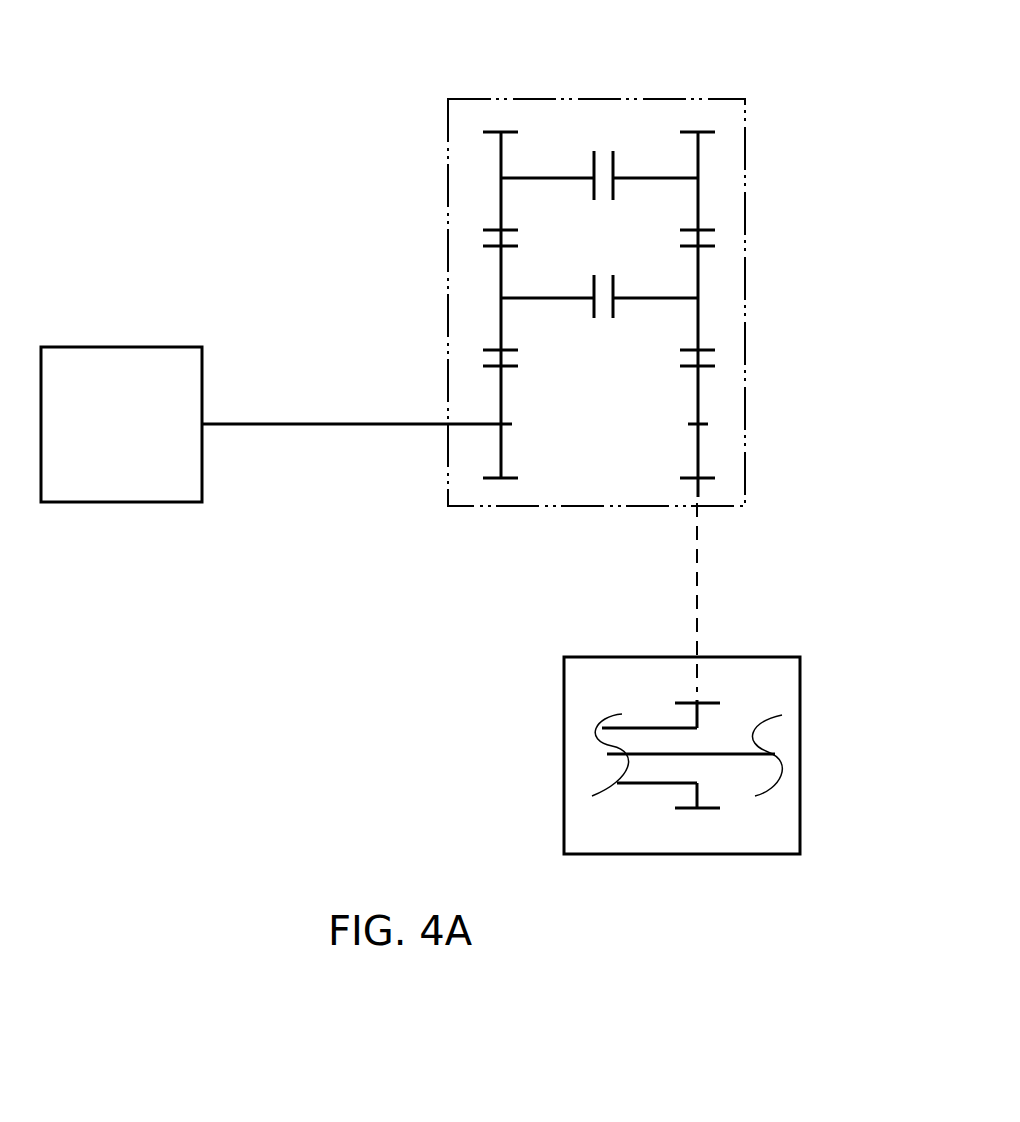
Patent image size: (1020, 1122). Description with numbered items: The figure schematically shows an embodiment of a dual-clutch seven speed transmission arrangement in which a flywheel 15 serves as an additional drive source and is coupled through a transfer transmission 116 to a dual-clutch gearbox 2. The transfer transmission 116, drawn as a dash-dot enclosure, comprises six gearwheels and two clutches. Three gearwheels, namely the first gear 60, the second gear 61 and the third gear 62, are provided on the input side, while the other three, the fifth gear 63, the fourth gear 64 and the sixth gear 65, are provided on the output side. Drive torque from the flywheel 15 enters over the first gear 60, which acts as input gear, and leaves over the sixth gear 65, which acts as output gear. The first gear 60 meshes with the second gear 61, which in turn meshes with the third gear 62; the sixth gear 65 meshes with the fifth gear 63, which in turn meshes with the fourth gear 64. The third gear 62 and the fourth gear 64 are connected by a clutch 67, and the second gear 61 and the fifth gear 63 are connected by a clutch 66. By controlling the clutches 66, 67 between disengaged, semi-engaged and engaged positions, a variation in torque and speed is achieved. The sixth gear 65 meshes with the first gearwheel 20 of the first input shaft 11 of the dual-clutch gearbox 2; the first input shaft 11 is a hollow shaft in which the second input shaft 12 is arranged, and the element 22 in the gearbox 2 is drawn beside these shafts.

The dual-clutch gearbox 2 is at (760, 657).
The first input shaft 11 is at (645, 783).
The second input shaft 12 is at (718, 757).
The flywheel 15 is at (117, 503).
The first gearwheel 20 is at (690, 793).
The ring gear 22 is at (600, 738).
The first gear 60 is at (499, 443).
The second gear 61 is at (500, 280).
The third gear 62 is at (500, 159).
The fifth gear 63 is at (700, 280).
The fourth gear 64 is at (699, 159).
The sixth gear 65 is at (699, 462).
The clutch 66 is at (613, 316).
The clutch 67 is at (615, 168).
The transfer transmission 116 is at (723, 76).